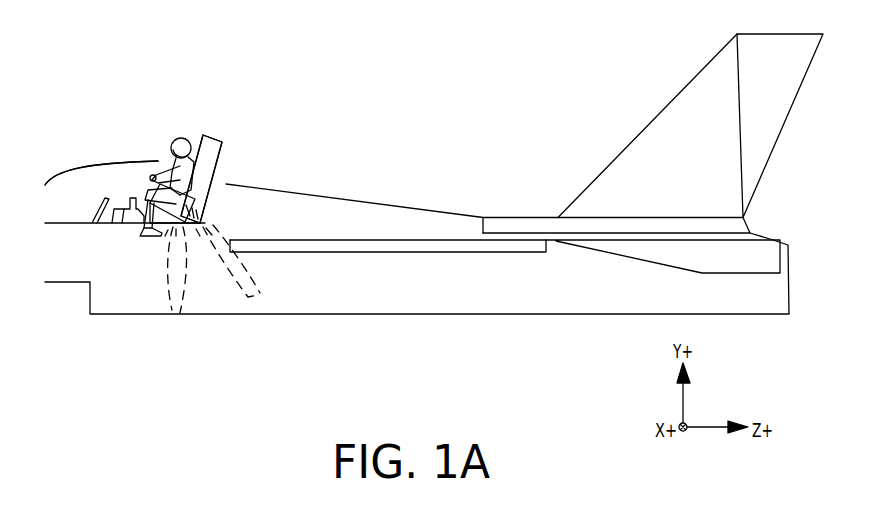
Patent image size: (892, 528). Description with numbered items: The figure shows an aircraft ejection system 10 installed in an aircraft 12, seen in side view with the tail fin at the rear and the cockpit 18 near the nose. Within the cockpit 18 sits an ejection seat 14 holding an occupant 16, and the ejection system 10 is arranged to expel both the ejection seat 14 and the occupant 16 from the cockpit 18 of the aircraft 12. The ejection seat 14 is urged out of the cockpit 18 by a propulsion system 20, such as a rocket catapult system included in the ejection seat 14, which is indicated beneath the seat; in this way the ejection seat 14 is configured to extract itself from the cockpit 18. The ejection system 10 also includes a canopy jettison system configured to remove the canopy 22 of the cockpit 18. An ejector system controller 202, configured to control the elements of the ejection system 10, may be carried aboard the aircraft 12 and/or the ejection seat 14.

The aircraft ejection system 10 is at (434, 174).
The aircraft 12 is at (449, 290).
The ejection seat 14 is at (223, 142).
The occupant 16 is at (172, 145).
The cockpit 18 is at (79, 207).
The propulsion system 20 is at (176, 272).
The canopy 22 is at (118, 161).
The ejector system controller 202 is at (205, 181).